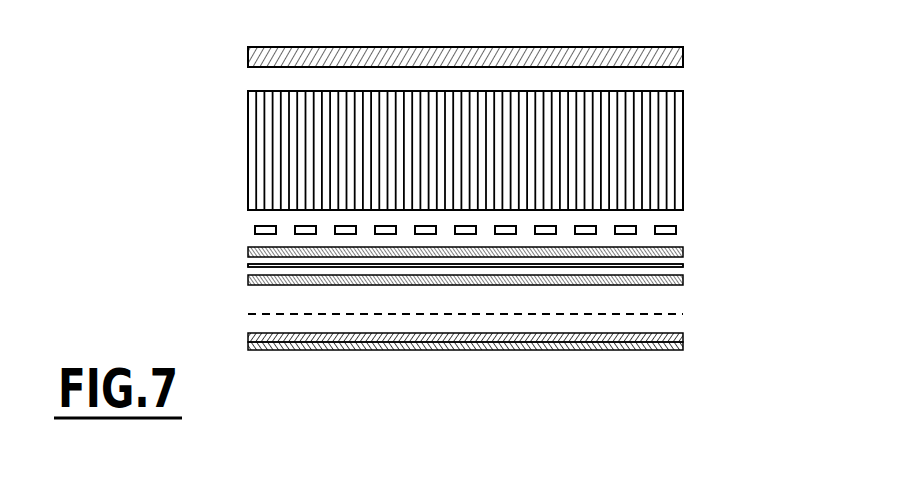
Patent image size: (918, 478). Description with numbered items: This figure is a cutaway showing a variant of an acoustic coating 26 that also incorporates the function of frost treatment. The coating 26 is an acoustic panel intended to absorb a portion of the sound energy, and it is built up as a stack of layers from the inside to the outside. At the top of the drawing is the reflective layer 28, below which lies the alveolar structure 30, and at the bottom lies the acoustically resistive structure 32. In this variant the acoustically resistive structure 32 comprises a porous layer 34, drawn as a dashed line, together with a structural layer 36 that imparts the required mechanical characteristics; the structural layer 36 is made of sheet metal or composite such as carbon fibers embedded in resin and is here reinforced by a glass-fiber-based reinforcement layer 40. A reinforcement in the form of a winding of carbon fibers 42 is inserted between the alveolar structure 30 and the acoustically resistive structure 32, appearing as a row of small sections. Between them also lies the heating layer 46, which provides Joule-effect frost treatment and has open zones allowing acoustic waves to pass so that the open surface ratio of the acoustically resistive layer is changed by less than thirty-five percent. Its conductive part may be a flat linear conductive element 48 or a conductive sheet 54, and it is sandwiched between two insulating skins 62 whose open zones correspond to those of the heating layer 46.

The coating 26 is at (196, 174).
The reflective layer 28 is at (248, 53).
The alveolar structure 30 is at (262, 120).
The acoustically resistive structure 32 is at (246, 310).
The porous layer 34 is at (668, 314).
The structural layer 36 is at (683, 335).
The reinforcement layer 40 is at (683, 344).
The winding of carbon fibers 42 is at (676, 228).
The heating layer 46 is at (690, 247).
The flat linear conductive element 48 is at (248, 264).
The conductive sheet 54 is at (465, 265).
The insulating skins 62 is at (248, 247).